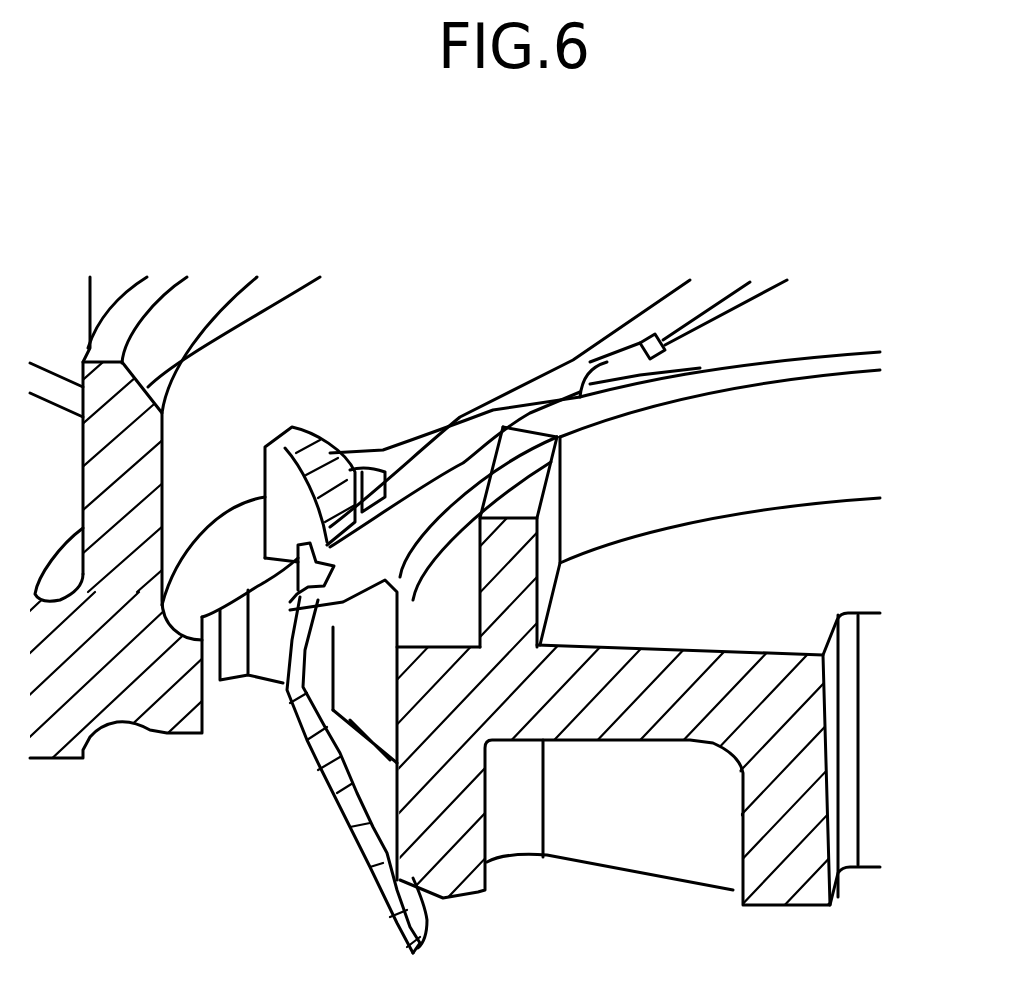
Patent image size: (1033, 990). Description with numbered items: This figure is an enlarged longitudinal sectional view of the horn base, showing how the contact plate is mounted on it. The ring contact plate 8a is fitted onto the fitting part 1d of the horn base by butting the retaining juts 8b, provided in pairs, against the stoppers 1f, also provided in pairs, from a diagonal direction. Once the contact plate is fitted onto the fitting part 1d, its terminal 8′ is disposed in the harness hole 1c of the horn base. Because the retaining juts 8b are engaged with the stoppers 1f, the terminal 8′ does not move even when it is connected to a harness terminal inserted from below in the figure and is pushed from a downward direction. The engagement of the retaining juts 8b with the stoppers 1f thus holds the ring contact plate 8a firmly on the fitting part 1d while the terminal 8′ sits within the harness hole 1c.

The harness hole 1c is at (259, 705).
The fitting part 1d is at (840, 418).
The stopper 1f is at (287, 508).
The ring contact plate 8a is at (667, 313).
The retaining jut 8b is at (437, 470).
The terminal 8′ is at (343, 793).